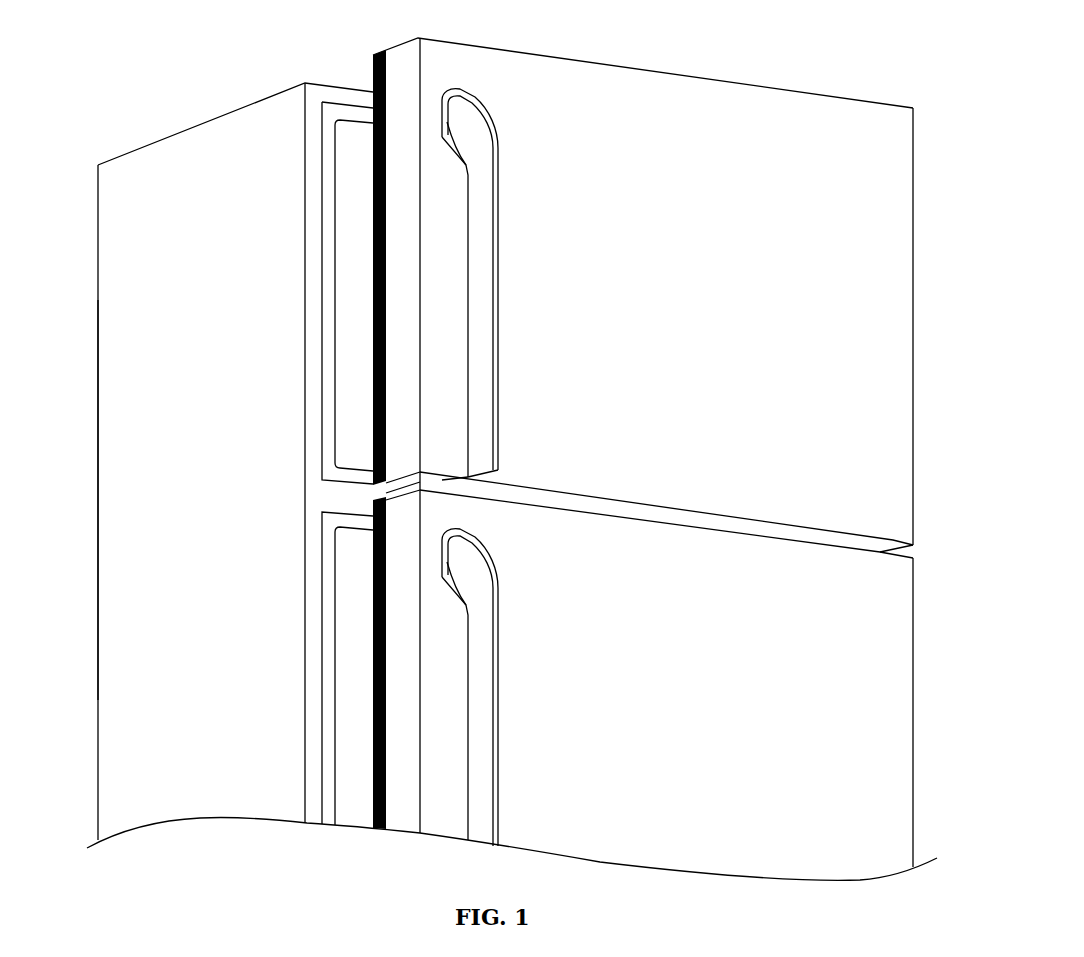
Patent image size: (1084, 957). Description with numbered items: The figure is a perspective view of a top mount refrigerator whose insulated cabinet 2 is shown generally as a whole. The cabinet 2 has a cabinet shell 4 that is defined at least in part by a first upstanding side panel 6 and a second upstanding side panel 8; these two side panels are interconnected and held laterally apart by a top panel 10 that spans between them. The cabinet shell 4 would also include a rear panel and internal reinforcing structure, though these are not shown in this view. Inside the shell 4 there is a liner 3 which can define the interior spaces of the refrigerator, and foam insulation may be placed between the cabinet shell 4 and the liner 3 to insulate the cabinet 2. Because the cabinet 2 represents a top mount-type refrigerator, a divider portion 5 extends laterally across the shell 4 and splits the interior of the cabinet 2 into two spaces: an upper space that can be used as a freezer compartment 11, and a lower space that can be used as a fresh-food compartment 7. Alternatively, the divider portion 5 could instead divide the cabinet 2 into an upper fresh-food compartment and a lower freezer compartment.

The insulated cabinet 2 is at (138, 60).
The liner 3 is at (335, 192).
The cabinet shell 4 is at (98, 438).
The divider portion 5 is at (333, 493).
The first upstanding side panel 6 is at (120, 558).
The fresh-food compartment 7 is at (350, 722).
The second upstanding side panel 8 is at (913, 340).
The top panel 10 is at (627, 65).
The freezer compartment 11 is at (352, 327).